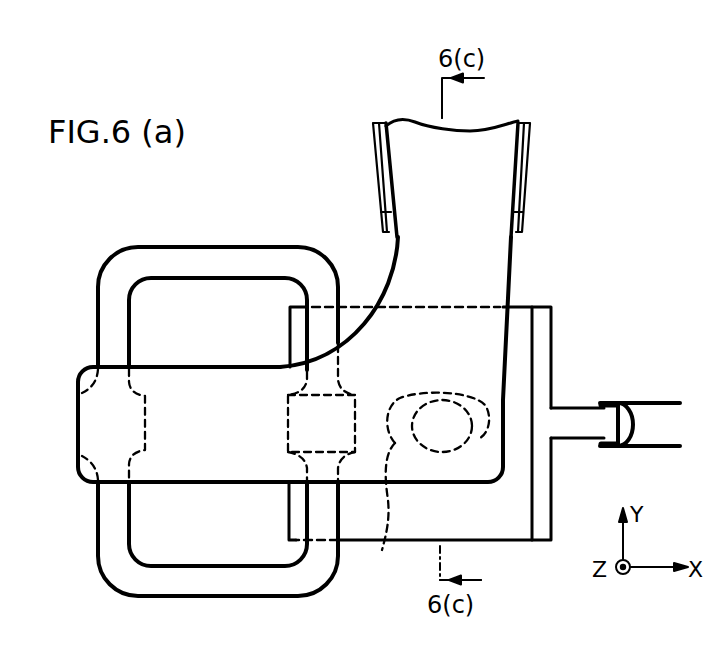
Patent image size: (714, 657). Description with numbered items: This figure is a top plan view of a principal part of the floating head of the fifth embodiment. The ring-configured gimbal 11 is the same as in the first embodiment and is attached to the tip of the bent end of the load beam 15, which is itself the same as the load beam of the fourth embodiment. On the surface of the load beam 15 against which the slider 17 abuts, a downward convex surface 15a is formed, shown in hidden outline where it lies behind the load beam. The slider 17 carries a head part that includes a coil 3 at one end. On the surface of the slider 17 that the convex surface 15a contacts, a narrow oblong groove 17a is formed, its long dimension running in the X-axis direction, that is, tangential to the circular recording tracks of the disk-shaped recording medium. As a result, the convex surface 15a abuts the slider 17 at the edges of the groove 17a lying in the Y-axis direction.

The coil 3 is at (611, 403).
The gimbal 11 is at (238, 262).
The load beam 15 is at (399, 152).
The downward convex surface 15a is at (480, 438).
The slider 17 is at (499, 520).
The narrow oblong groove 17a is at (387, 518).